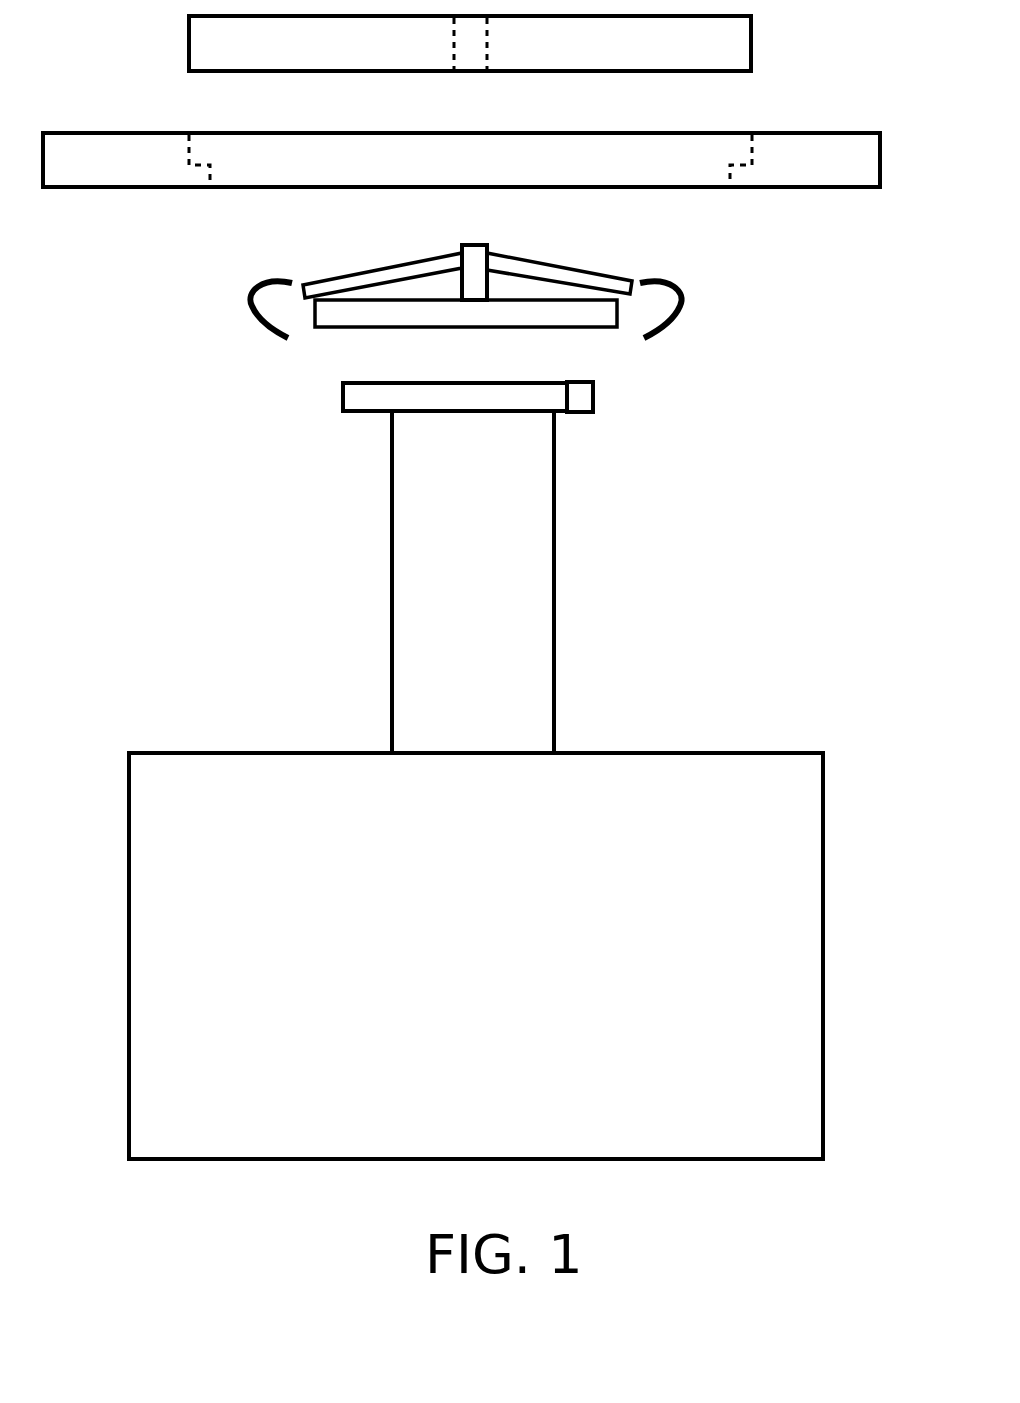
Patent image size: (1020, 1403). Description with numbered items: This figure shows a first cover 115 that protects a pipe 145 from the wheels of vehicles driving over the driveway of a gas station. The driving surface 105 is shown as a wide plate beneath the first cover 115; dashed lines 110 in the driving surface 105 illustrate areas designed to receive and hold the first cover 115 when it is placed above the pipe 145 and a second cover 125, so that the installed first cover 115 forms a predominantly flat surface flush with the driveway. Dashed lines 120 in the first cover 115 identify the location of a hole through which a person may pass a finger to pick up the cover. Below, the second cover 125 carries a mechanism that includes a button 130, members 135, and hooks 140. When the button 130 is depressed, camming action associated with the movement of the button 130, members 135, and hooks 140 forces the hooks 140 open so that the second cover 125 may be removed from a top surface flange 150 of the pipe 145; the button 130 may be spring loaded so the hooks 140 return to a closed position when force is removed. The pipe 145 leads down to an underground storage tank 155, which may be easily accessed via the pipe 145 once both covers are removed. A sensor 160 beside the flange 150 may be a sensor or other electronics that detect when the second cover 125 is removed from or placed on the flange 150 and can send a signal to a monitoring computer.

The driving surface 105 is at (127, 132).
The dashed lines 110 is at (187, 152).
The first cover 115 is at (189, 53).
The dashed lines 120 is at (477, 52).
The second cover 125 is at (372, 323).
The button 130 is at (473, 262).
The members 135 is at (377, 270).
The hooks 140 is at (263, 325).
The pipe 145 is at (390, 527).
The top surface flange 150 is at (342, 413).
The underground storage tank 155 is at (620, 752).
The sensor 160 is at (595, 395).